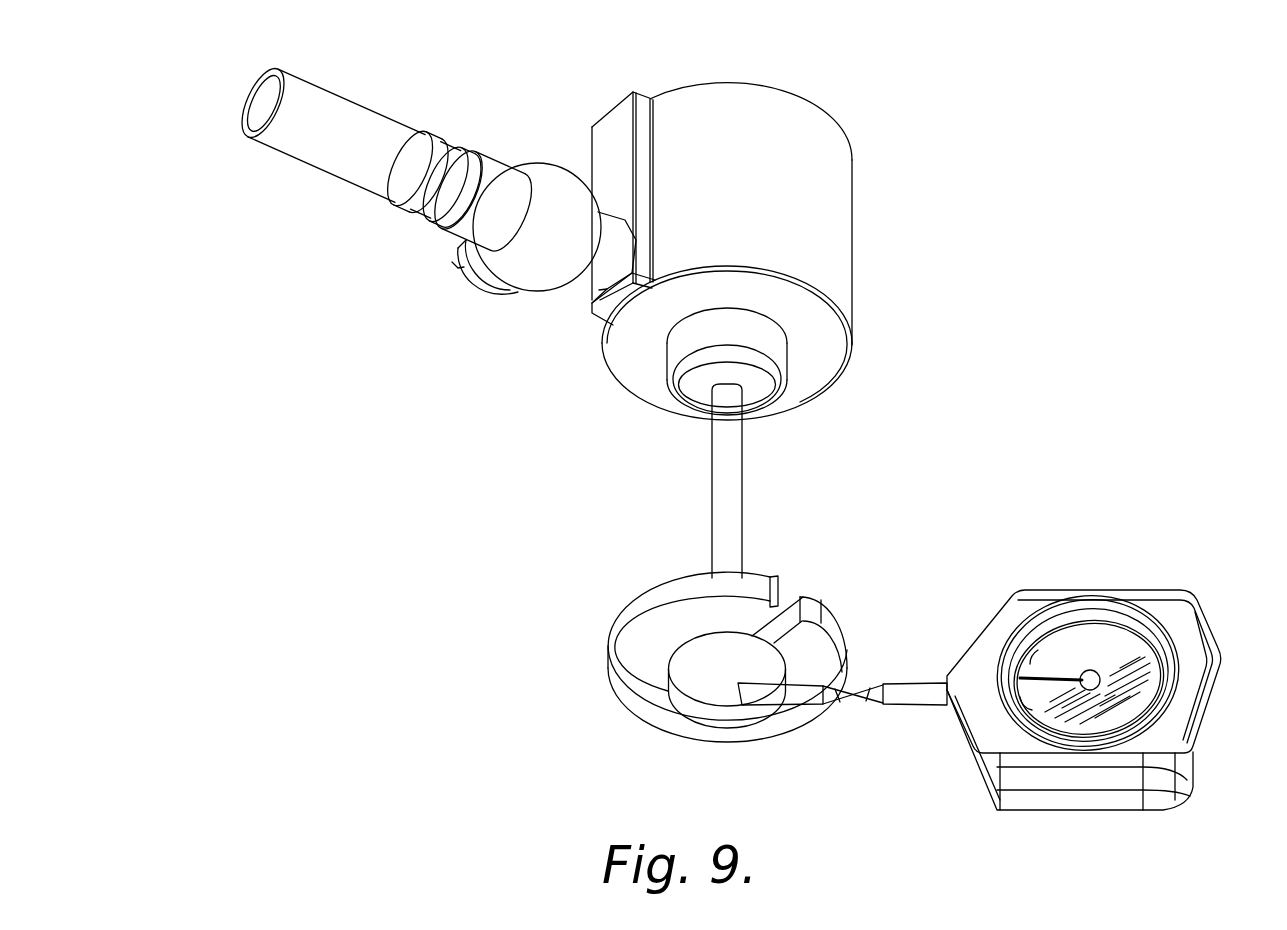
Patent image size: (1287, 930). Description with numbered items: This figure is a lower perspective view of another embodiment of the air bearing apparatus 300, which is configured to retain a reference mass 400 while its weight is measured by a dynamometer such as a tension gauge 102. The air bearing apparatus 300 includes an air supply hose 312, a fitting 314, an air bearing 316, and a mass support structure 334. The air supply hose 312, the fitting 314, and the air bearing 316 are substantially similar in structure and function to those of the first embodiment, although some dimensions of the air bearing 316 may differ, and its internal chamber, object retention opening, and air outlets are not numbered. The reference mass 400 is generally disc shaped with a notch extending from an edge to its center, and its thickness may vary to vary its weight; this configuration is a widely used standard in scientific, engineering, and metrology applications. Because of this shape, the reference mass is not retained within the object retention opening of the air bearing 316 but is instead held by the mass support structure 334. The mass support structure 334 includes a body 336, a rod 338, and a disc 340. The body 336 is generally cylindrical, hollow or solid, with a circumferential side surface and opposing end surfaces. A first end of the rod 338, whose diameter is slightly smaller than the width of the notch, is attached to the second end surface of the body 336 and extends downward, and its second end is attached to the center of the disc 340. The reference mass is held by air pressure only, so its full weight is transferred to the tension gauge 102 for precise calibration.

The air bearing apparatus 300 is at (877, 110).
The air supply hose 312 is at (288, 176).
The fitting 314 is at (524, 142).
The air bearing 316 is at (875, 227).
The body 336 is at (685, 345).
The mass support structure 334 is at (773, 443).
The rod 338 is at (723, 493).
The reference mass 400 is at (627, 678).
The disc 340 is at (728, 717).
The tension gauge 102 is at (1125, 580).